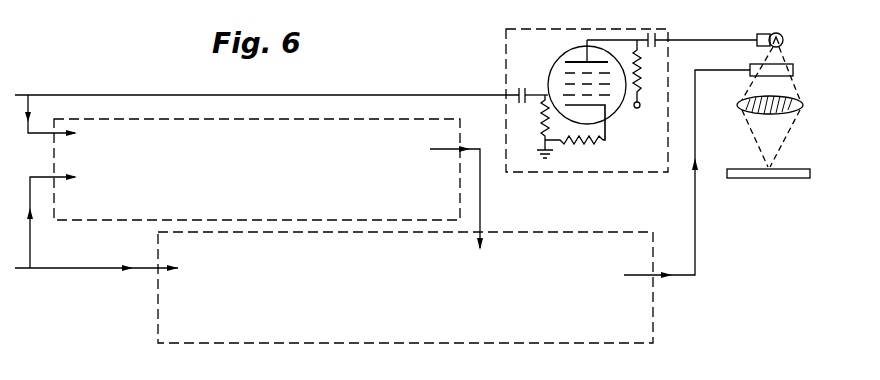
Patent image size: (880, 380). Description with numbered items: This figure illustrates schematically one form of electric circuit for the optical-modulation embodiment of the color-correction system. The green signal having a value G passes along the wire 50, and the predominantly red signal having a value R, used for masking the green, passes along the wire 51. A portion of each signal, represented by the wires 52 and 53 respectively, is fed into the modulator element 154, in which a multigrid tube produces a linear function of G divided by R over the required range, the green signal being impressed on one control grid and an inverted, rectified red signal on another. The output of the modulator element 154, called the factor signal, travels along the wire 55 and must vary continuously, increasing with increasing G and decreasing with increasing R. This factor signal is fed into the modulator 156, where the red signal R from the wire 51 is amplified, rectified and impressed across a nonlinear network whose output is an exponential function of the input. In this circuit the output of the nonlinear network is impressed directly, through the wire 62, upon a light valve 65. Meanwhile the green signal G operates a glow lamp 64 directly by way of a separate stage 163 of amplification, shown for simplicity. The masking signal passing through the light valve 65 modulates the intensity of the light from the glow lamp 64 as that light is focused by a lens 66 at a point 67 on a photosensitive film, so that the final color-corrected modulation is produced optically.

The wire 50 is at (127, 95).
The wire 51 is at (88, 268).
The wire 52 is at (32, 96).
The wire 53 is at (30, 245).
The wire 55 is at (482, 203).
The wire 62 is at (697, 240).
The glow lamp 64 is at (775, 33).
The light valve 65 is at (755, 65).
The lens 66 is at (747, 112).
The point on photosensitive film 67 is at (762, 170).
The modulator element 154 is at (257, 169).
The modulator 156 is at (405, 287).
The stage of amplification 163 is at (505, 34).